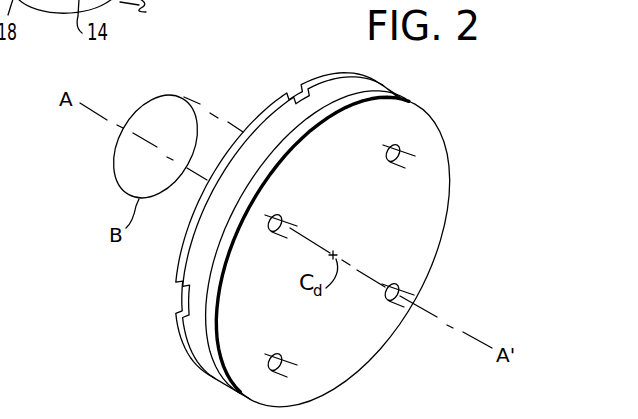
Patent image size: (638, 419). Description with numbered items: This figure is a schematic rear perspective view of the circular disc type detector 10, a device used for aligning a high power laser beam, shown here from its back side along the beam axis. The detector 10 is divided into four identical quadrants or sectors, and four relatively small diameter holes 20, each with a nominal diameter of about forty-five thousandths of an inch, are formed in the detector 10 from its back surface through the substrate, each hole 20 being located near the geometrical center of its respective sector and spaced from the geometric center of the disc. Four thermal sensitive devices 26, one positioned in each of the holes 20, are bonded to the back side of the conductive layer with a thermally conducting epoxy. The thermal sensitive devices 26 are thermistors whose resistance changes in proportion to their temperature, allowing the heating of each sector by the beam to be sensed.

The circular disc type detector 10 is at (489, 121).
The holes 20 is at (386, 149).
The thermal sensitive devices 26 is at (399, 164).